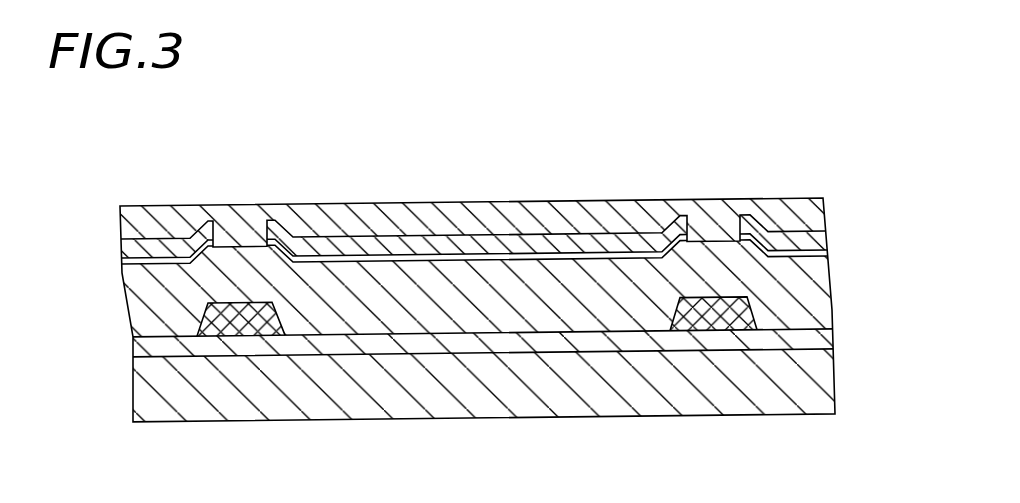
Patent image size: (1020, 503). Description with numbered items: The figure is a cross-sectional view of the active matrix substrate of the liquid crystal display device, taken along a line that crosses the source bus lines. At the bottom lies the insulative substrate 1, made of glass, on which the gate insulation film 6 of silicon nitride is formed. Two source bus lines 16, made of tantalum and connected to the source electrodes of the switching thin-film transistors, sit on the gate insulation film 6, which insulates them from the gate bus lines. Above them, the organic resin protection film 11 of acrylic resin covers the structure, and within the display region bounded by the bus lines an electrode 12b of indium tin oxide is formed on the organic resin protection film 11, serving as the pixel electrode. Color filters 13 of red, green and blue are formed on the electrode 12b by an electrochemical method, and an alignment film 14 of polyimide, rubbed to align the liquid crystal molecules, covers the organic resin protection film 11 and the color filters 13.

The insulative substrate 1 is at (822, 403).
The gate insulation film 6 is at (802, 346).
The organic resin protection film 11 is at (815, 290).
The electrode 12b is at (412, 264).
The color filters 13 is at (559, 250).
The alignment film 14 is at (723, 222).
The source bus line 16 is at (700, 325).